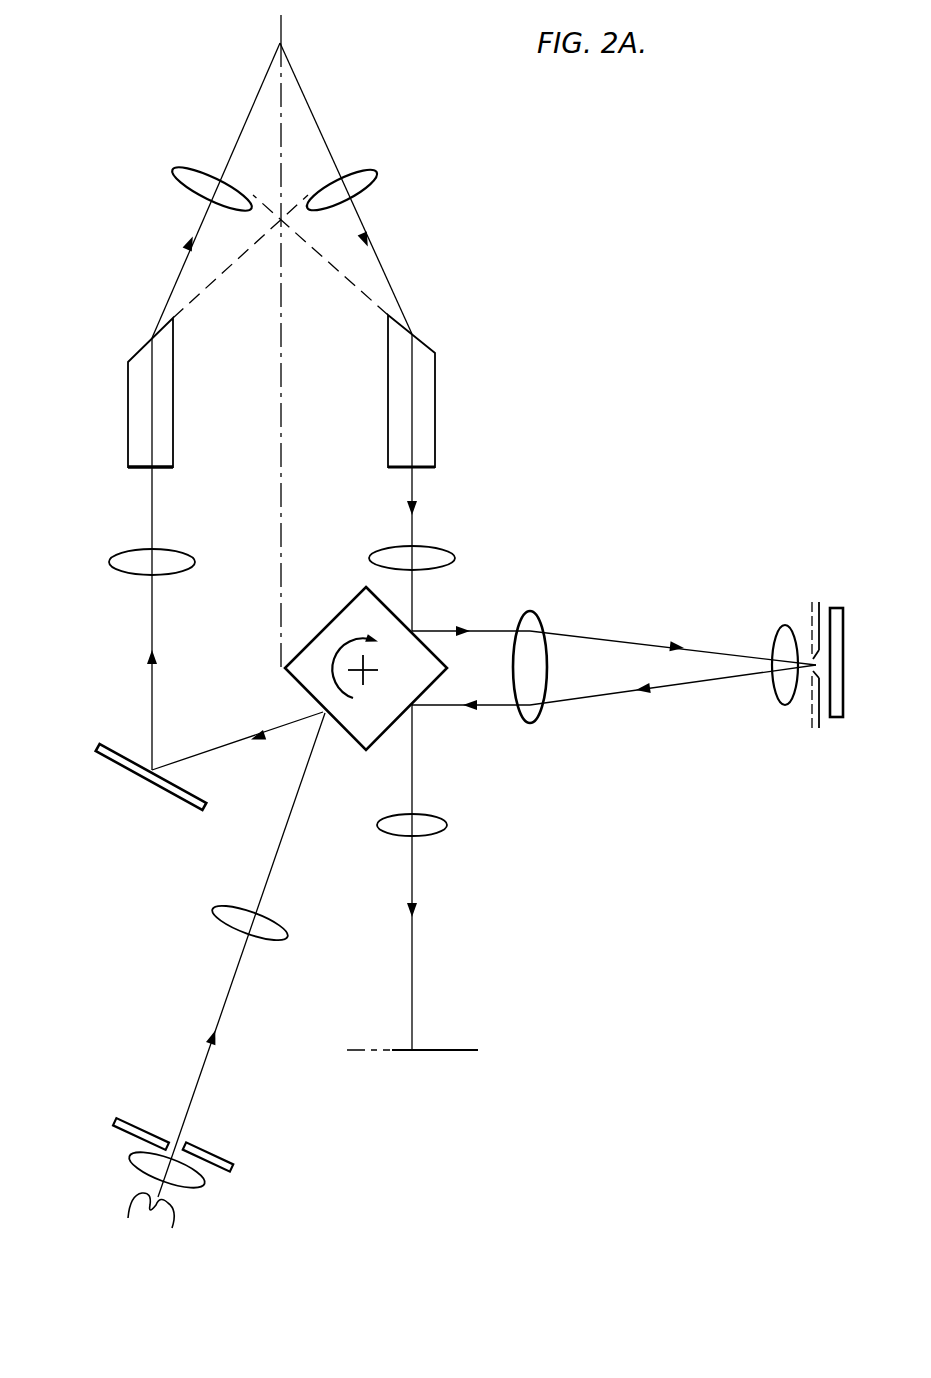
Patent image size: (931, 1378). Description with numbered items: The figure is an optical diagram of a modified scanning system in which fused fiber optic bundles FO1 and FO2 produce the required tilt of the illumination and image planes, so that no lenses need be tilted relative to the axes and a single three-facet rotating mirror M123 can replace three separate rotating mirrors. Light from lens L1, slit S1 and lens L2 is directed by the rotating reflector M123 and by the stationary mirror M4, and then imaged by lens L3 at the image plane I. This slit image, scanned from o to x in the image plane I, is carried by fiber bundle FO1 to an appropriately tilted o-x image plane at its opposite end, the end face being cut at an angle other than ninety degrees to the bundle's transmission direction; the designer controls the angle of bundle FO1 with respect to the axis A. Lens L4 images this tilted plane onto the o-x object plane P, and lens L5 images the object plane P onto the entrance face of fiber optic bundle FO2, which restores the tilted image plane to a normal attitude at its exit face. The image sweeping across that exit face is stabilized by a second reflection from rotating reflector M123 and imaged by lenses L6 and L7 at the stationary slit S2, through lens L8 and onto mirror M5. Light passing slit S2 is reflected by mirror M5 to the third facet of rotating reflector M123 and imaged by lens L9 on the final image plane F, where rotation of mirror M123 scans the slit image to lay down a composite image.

The object plane P is at (289, 30).
The axis A is at (278, 383).
The lens L1 is at (129, 1159).
The lens L2 is at (217, 908).
The lens L3 is at (127, 553).
The lens L4 is at (172, 170).
The lens L5 is at (380, 176).
The lens L6 is at (458, 555).
The lens L7 is at (550, 617).
The lens L8 is at (777, 710).
The lens L9 is at (448, 821).
The fiber optic bundle FO1 is at (125, 420).
The fiber optic bundle FO2 is at (440, 423).
The image plane I is at (122, 470).
The three-facet rotating mirror M123 is at (336, 613).
The stationary mirror M4 is at (101, 746).
The mirror M5 is at (839, 603).
The slit S1 is at (187, 1132).
The stationary slit S2 is at (798, 656).
The final image plane F is at (473, 1042).